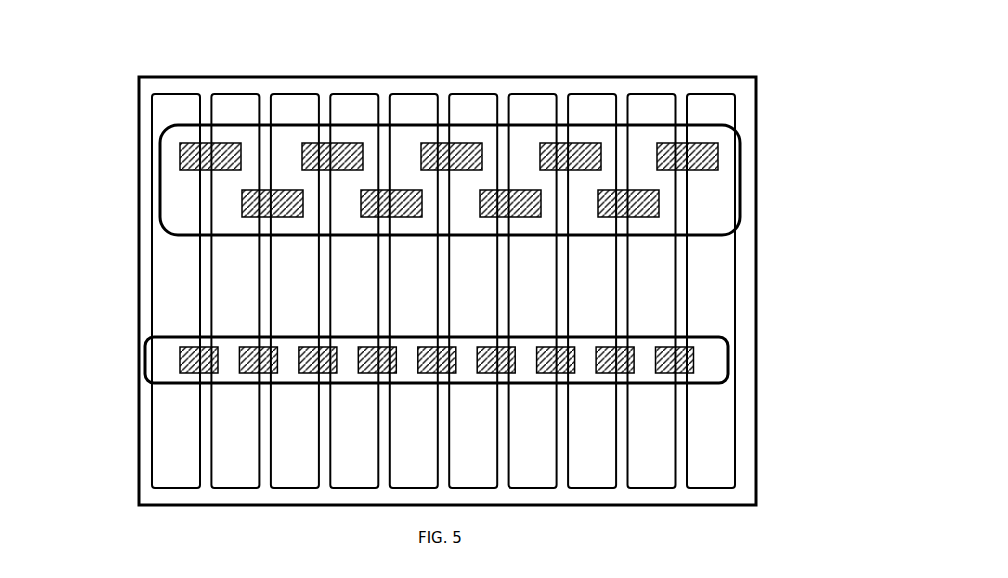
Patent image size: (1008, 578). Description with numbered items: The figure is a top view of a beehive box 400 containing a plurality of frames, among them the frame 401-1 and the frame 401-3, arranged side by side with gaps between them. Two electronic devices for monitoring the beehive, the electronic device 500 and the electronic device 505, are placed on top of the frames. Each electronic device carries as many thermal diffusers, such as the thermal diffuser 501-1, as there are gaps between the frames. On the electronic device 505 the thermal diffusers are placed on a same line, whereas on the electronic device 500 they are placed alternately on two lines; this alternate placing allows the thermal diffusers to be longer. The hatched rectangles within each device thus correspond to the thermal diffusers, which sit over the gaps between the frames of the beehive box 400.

The beehive box 400 is at (138, 169).
The frame 401-1 is at (193, 100).
The frame 401-3 is at (306, 107).
The electronic device 500 is at (731, 202).
The thermal diffuser 501-1 is at (183, 341).
The electronic device 505 is at (722, 357).